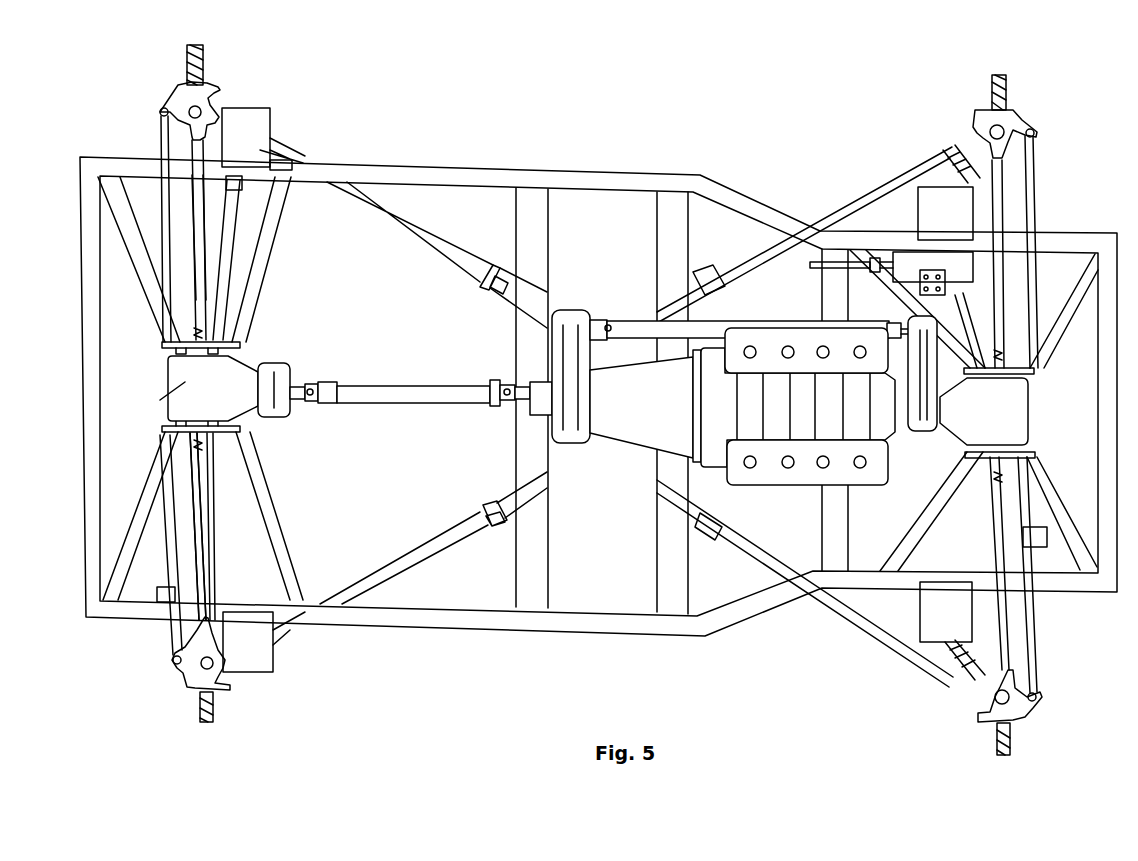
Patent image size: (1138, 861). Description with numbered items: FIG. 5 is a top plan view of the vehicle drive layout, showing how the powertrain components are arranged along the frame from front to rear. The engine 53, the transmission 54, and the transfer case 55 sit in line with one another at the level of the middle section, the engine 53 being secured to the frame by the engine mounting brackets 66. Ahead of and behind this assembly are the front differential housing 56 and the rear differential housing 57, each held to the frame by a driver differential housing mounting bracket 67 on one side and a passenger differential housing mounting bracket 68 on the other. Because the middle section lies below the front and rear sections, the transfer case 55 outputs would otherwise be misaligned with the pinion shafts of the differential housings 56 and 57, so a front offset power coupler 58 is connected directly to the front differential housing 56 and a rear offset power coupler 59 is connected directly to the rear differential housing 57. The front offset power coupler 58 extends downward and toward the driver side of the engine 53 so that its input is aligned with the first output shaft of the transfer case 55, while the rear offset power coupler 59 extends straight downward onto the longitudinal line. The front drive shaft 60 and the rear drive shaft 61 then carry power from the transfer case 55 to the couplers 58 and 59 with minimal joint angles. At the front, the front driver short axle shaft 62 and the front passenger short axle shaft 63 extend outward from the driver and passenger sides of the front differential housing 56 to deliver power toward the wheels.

The engine 53 is at (802, 474).
The transmission 54 is at (643, 428).
The transfer case 55 is at (570, 322).
The front differential housing 56 is at (1013, 405).
The rear differential housing 57 is at (168, 397).
The front offset power coupler 58 is at (925, 424).
The rear offset power coupler 59 is at (287, 364).
The front drive shaft 60 is at (748, 322).
The rear drive shaft 61 is at (427, 397).
The front driver short axle shaft 62 is at (200, 248).
The front passenger short axle shaft 63 is at (193, 530).
The engine mounting bracket 66 is at (838, 528).
The driver differential housing mounting bracket 67 is at (262, 273).
The passenger differential housing mounting bracket 68 is at (260, 522).